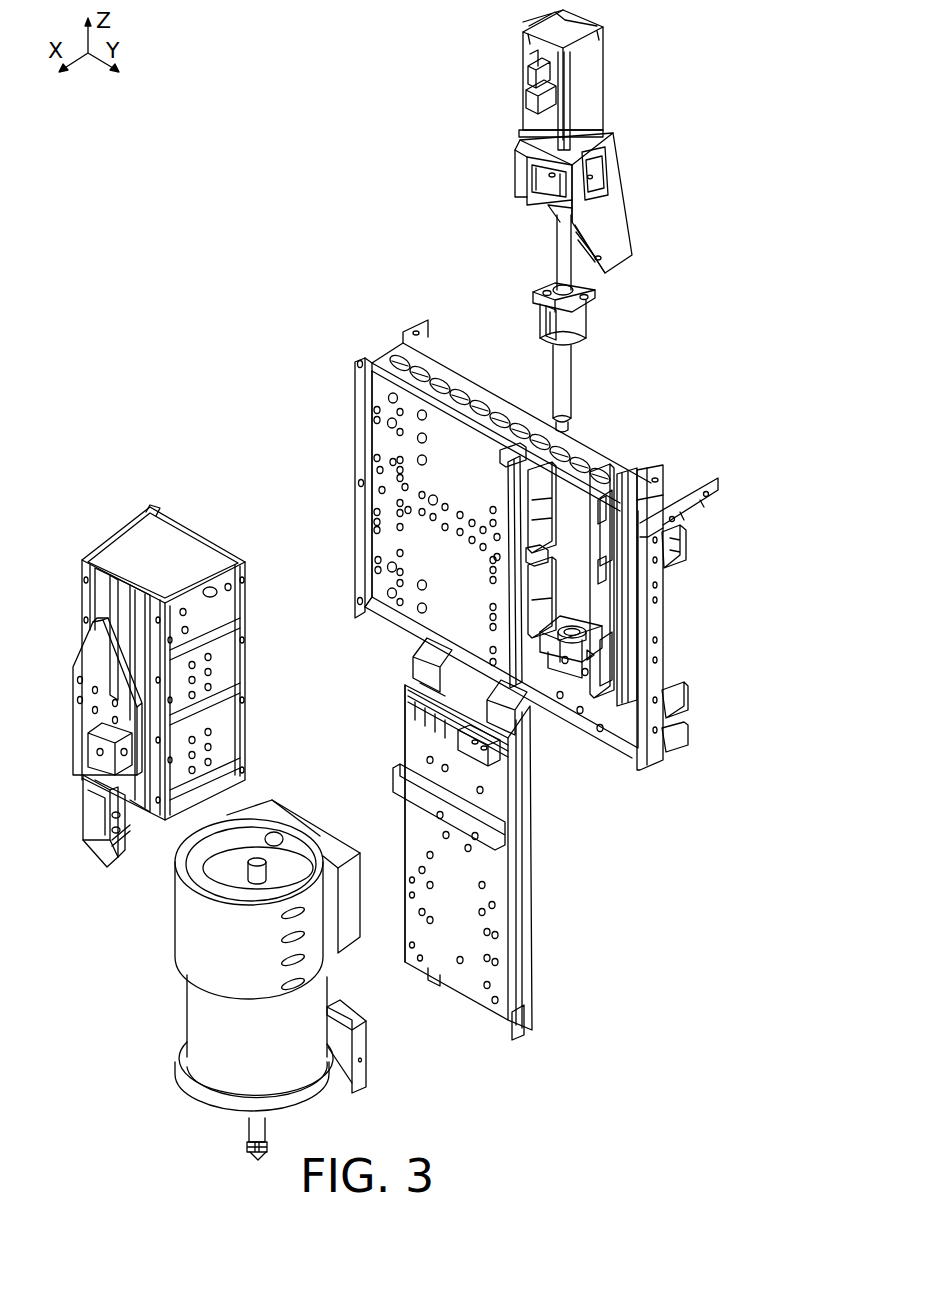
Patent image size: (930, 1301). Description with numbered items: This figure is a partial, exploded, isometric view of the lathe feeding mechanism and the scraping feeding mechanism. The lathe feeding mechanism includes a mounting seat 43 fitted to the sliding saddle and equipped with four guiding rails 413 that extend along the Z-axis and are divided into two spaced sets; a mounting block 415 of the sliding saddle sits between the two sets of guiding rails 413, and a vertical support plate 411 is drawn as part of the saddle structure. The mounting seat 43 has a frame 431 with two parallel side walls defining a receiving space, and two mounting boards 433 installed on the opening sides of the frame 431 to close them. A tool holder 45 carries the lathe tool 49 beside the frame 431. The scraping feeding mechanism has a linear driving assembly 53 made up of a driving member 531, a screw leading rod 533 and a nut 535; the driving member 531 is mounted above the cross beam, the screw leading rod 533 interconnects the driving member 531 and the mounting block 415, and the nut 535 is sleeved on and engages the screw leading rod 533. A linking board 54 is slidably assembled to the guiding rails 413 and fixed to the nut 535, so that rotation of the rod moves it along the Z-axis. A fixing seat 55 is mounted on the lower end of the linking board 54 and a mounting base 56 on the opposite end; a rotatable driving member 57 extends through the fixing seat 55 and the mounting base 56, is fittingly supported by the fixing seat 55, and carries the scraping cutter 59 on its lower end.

The mounting seat 43 is at (62, 492).
The frame 431 is at (130, 552).
The mounting board 433 is at (140, 530).
The tool holder 45 is at (95, 665).
The lathe tool 49 is at (85, 828).
The linear driving assembly 53 is at (498, 132).
The driving member 531 is at (585, 80).
The screw leading rod 533 is at (563, 273).
The nut 535 is at (577, 328).
The support frame 411 is at (683, 565).
The guiding rail 413 is at (560, 472).
The mounting block 415 is at (578, 668).
The linking board 54 is at (518, 905).
The fixing seat 55 is at (360, 1057).
The mounting base 56 is at (325, 930).
The rotatable driving member 57 is at (205, 1022).
The scraping cutter 59 is at (285, 1140).